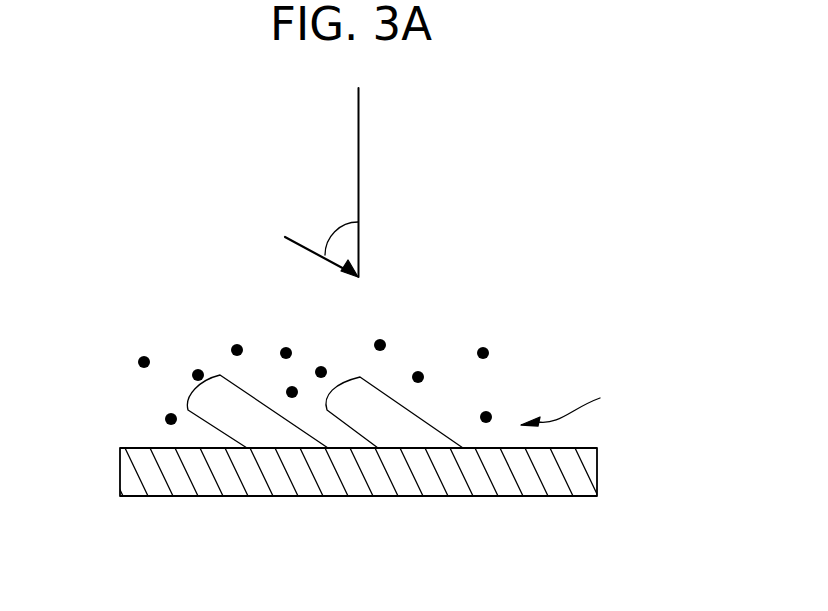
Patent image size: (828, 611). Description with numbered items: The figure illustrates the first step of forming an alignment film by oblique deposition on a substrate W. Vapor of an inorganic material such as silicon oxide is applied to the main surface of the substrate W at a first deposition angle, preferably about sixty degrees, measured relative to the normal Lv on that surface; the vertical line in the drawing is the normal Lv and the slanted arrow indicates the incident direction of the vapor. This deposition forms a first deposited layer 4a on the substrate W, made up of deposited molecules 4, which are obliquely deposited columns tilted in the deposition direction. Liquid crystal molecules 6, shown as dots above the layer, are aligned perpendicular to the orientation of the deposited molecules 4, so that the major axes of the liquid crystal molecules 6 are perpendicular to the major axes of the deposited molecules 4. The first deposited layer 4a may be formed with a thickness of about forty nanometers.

The substrate W is at (597, 467).
The deposited molecules 4 is at (425, 420).
The first deposited layer 4a is at (577, 408).
The liquid crystal molecules 6 is at (145, 352).
The normal Lv is at (358, 151).